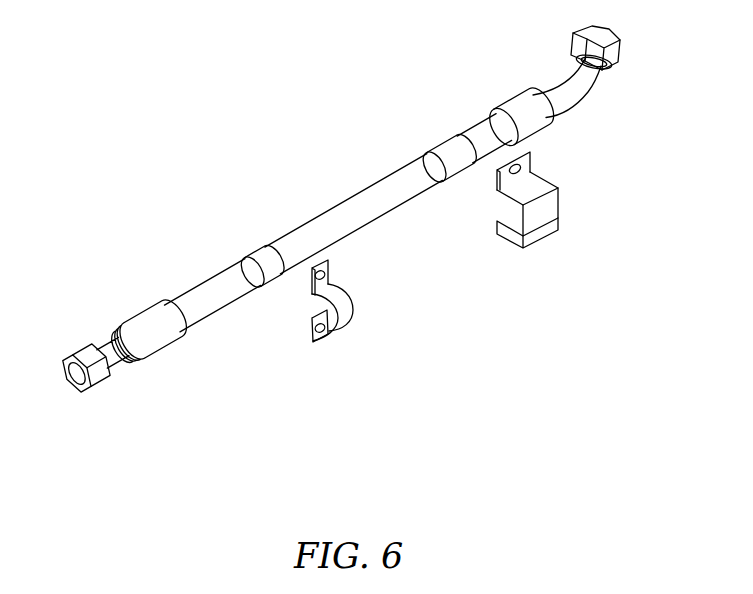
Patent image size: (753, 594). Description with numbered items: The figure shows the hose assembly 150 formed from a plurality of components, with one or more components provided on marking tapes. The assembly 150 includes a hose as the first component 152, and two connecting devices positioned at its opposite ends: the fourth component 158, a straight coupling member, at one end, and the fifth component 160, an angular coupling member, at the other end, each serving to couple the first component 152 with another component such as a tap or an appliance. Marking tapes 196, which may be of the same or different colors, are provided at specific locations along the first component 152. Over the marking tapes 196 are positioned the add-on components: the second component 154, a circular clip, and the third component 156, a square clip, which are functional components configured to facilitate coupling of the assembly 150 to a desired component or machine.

The assembly 150 is at (191, 83).
The first component 152 is at (373, 210).
The second component 154 is at (341, 305).
The third component 156 is at (538, 208).
The fourth component 158 is at (152, 340).
The fifth component 160 is at (538, 122).
The marking tapes 196 is at (264, 255).